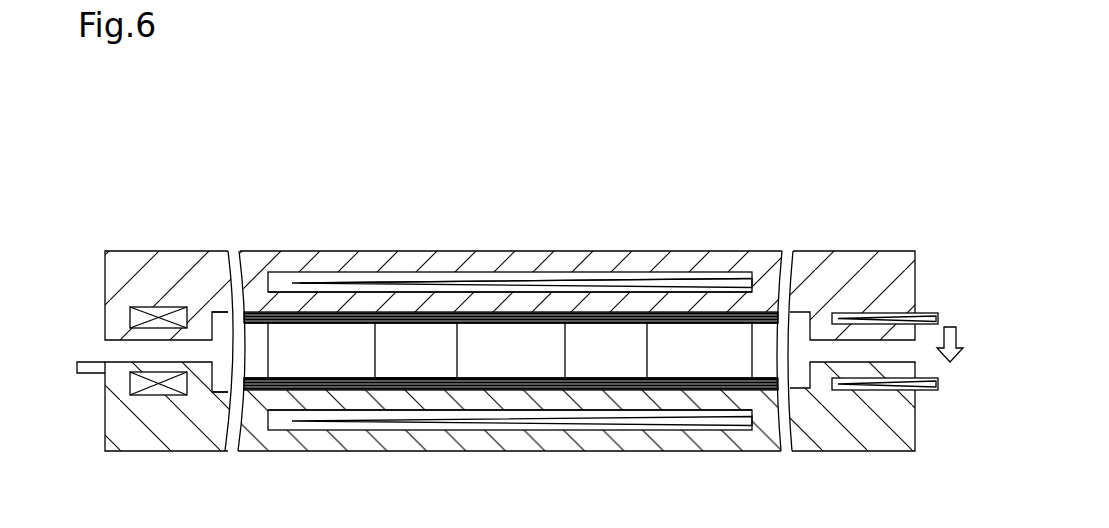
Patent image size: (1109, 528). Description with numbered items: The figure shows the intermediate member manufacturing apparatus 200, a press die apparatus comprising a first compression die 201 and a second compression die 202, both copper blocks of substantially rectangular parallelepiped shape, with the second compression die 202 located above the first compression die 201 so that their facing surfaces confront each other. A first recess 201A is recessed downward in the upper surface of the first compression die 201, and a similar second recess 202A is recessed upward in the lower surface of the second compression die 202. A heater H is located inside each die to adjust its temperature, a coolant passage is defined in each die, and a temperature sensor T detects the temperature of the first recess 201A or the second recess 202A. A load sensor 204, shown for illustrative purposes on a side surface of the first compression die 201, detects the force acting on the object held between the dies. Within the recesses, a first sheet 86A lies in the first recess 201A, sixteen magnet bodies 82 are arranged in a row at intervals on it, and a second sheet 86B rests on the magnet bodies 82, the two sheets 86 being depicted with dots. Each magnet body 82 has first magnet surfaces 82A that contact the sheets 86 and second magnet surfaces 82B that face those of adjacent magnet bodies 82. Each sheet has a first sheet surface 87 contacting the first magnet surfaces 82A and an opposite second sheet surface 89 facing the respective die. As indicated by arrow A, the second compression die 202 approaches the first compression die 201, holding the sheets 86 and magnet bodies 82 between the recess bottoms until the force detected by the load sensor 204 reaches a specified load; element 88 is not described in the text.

The intermediate member manufacturing apparatus 200 is at (166, 160).
The first compression die 201 is at (495, 435).
The first recess 201A is at (217, 395).
The second compression die 202 is at (510, 318).
The second recess 202A is at (226, 300).
The load sensor 204 is at (90, 374).
The magnet body 82 is at (460, 345).
The first magnet surface 82A is at (530, 318).
The second magnet surface 82B is at (436, 392).
The sheet 86 is at (520, 281).
The first sheet 86A is at (678, 425).
The second sheet 86B is at (640, 315).
The first sheet surface 87 is at (487, 318).
The gas flow 88 is at (240, 352).
The second sheet surface 89 is at (364, 273).
The heater H is at (292, 270).
The temperature sensor T is at (926, 316).
The arrow A is at (957, 343).